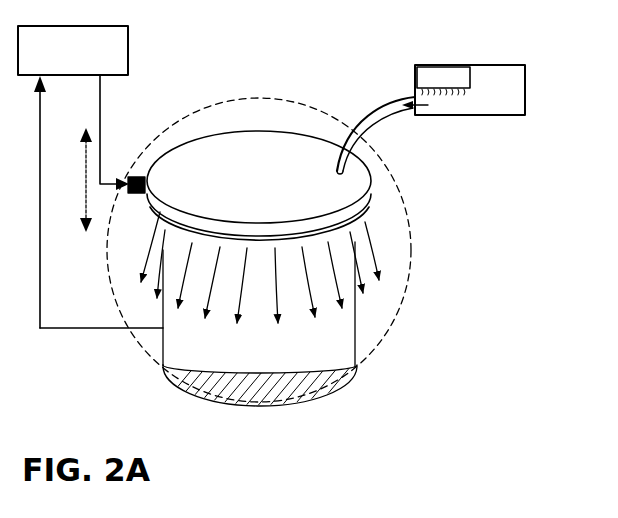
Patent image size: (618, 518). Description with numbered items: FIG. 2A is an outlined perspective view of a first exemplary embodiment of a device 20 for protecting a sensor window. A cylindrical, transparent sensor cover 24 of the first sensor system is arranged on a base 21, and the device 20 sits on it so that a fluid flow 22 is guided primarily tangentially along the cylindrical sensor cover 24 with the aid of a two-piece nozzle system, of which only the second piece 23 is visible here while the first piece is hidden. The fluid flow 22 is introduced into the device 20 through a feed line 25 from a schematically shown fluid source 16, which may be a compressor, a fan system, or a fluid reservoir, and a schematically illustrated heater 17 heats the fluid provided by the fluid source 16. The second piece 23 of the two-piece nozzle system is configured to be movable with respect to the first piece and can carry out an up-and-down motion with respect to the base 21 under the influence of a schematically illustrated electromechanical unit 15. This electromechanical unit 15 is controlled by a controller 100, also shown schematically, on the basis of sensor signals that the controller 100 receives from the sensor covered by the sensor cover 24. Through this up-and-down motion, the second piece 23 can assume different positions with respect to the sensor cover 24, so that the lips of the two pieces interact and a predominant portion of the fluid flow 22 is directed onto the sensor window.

The controller 100 is at (129, 53).
The electromechanical unit 15 is at (132, 176).
The fluid source 16 is at (526, 90).
The heater 17 is at (448, 65).
The device for protecting a sensor window 20 is at (318, 86).
The base 21 is at (262, 389).
The fluid flow 22 is at (377, 258).
The second piece 23 is at (255, 140).
The sensor cover 24 is at (356, 333).
The feed line 25 is at (405, 112).